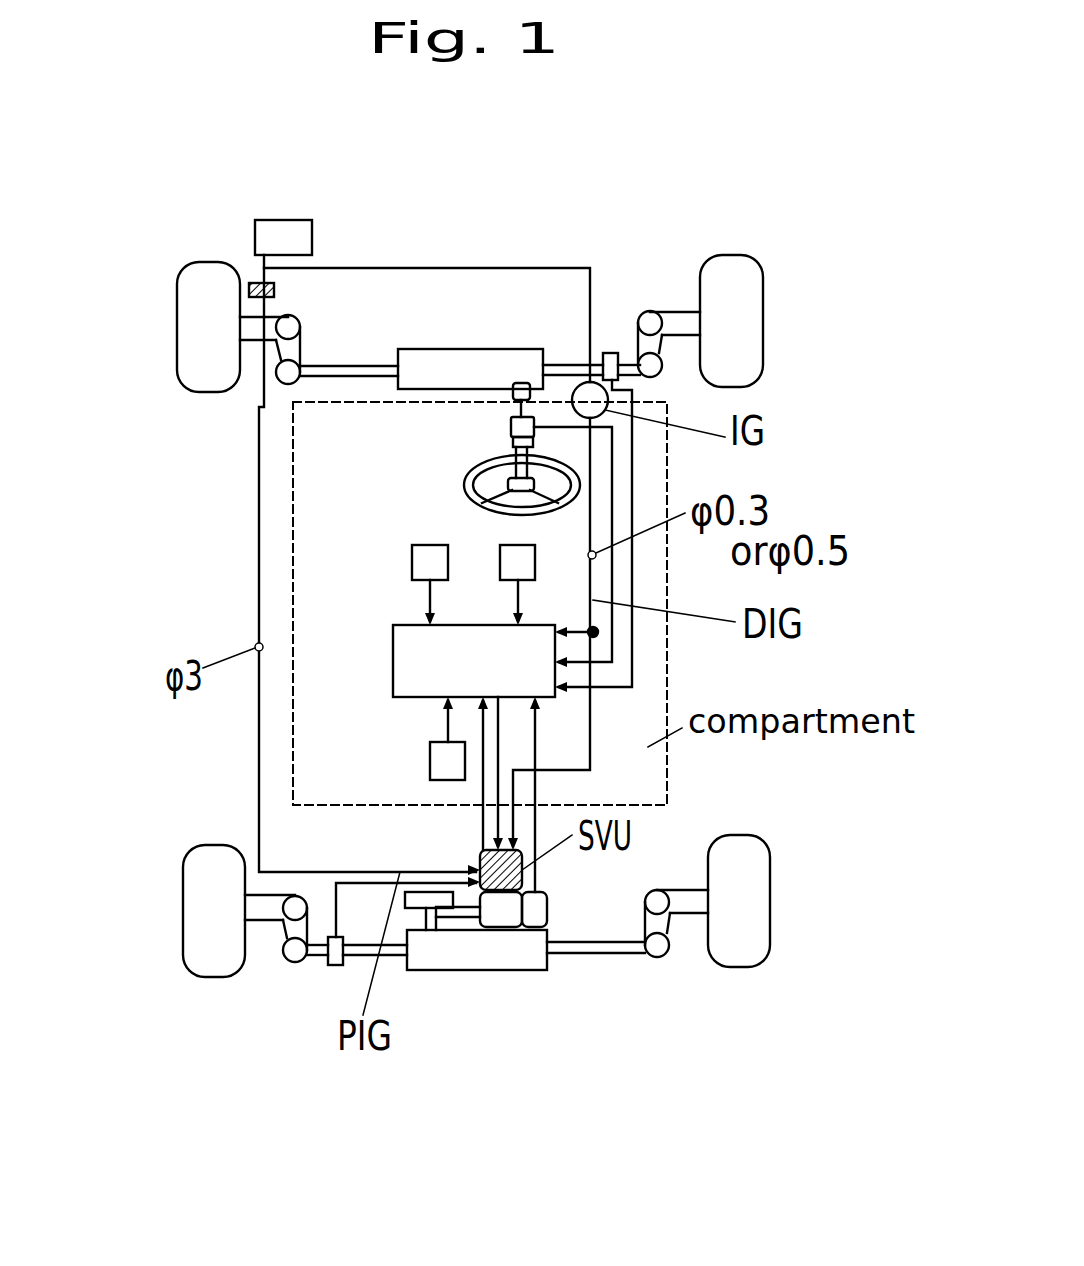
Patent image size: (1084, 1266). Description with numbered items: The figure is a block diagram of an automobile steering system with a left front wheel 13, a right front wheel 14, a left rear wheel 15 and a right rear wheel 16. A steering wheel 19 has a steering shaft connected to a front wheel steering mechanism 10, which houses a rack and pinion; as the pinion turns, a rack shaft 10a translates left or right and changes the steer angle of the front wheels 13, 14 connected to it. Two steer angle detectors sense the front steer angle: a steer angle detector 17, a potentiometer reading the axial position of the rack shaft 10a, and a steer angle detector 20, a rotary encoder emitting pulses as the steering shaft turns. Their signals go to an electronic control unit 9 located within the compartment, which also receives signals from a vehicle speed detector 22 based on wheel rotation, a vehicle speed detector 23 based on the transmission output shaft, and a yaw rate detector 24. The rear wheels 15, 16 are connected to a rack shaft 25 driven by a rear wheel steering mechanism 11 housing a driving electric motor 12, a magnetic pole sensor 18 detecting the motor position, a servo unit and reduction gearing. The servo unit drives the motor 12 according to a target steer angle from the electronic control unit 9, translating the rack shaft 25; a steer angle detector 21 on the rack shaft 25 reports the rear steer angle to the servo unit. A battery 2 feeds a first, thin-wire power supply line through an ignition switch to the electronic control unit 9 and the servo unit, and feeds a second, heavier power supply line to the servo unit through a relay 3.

The battery 2 is at (295, 220).
The relay 3 is at (260, 283).
The electronic control unit 9 is at (393, 642).
The front wheel steering mechanism 10 is at (487, 348).
The rack shaft 10a is at (380, 365).
The rear wheel steering mechanism 11 is at (497, 970).
The driving electric motor 12 is at (510, 920).
The left front wheel 13 is at (177, 335).
The right front wheel 14 is at (763, 322).
The left rear wheel 15 is at (183, 905).
The right rear wheel 16 is at (772, 905).
The steer angle detector 17 is at (607, 348).
The magnetic pole sensor 18 is at (547, 908).
The steering wheel 19 is at (465, 483).
The steer angle detector 20 is at (510, 427).
The steer angle detector 21 is at (336, 967).
The vehicle speed detector 22 is at (412, 565).
The vehicle speed detector 23 is at (535, 568).
The yaw rate detector 24 is at (430, 762).
The rack shaft 25 is at (587, 957).